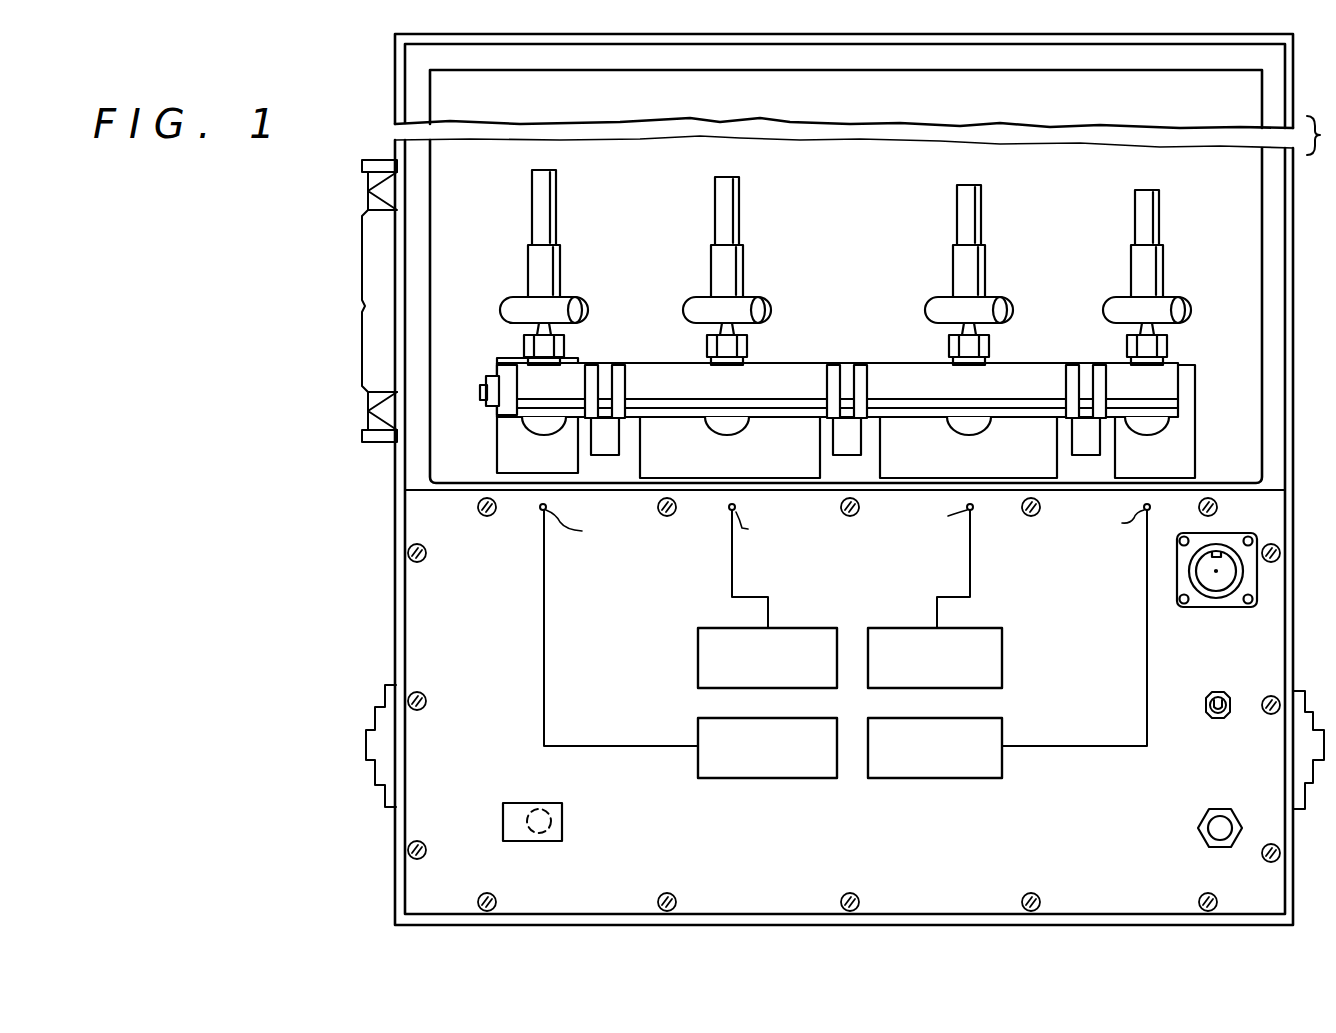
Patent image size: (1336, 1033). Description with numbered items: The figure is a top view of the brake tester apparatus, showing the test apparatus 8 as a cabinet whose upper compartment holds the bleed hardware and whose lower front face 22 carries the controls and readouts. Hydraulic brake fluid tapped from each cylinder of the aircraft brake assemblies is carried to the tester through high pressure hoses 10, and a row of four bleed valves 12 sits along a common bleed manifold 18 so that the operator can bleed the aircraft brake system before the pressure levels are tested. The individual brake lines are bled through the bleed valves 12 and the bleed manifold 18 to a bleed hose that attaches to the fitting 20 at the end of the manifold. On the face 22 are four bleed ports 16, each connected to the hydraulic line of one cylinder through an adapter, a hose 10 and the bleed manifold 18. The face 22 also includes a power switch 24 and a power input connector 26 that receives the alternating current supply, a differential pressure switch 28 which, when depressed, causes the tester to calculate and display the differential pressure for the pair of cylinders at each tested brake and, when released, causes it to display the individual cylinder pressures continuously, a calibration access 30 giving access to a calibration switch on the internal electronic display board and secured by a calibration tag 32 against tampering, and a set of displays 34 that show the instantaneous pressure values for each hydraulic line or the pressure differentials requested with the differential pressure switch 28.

The test apparatus 8 is at (362, 514).
The high pressure hose 10 is at (556, 211).
The bleed valve 12 is at (583, 310).
The bleed port 16 is at (570, 360).
The bleed manifold 18 is at (795, 385).
The fitting 20 is at (480, 378).
The face 22 is at (1085, 648).
The power switch 24 is at (1209, 717).
The power input connector 26 is at (1215, 583).
The differential pressure switch 28 is at (1200, 834).
The calibration access 30 is at (513, 812).
The calibration tag 32 is at (546, 815).
The displays 34 is at (879, 632).